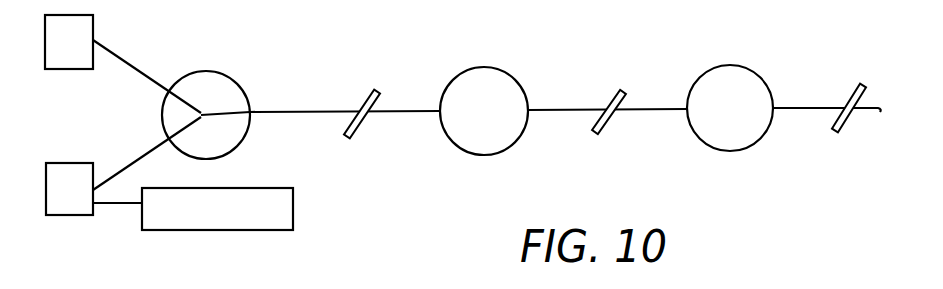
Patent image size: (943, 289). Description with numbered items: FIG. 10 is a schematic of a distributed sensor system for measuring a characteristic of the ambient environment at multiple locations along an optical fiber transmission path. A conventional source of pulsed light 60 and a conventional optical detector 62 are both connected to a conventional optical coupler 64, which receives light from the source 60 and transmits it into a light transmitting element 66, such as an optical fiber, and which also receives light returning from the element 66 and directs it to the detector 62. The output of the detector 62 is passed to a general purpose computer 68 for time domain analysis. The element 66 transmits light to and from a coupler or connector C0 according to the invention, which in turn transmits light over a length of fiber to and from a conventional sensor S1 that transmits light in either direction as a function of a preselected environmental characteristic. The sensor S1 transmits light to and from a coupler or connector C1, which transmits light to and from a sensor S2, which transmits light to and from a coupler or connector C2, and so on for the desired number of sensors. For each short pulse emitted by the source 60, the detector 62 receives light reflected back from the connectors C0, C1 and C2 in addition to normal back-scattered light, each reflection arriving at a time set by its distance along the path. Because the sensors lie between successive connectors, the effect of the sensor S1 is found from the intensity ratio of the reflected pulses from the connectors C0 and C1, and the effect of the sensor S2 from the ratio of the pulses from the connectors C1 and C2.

The source of pulsed light 60 is at (93, 18).
The optical detector 62 is at (85, 215).
The optical coupler 64 is at (217, 90).
The light transmitting element 66 is at (298, 112).
The general purpose computer 68 is at (247, 229).
The sensor S1 is at (484, 111).
The sensor S2 is at (730, 108).
The coupler or connector C0 is at (360, 132).
The coupler or connector C1 is at (612, 127).
The coupler or connector C2 is at (840, 133).